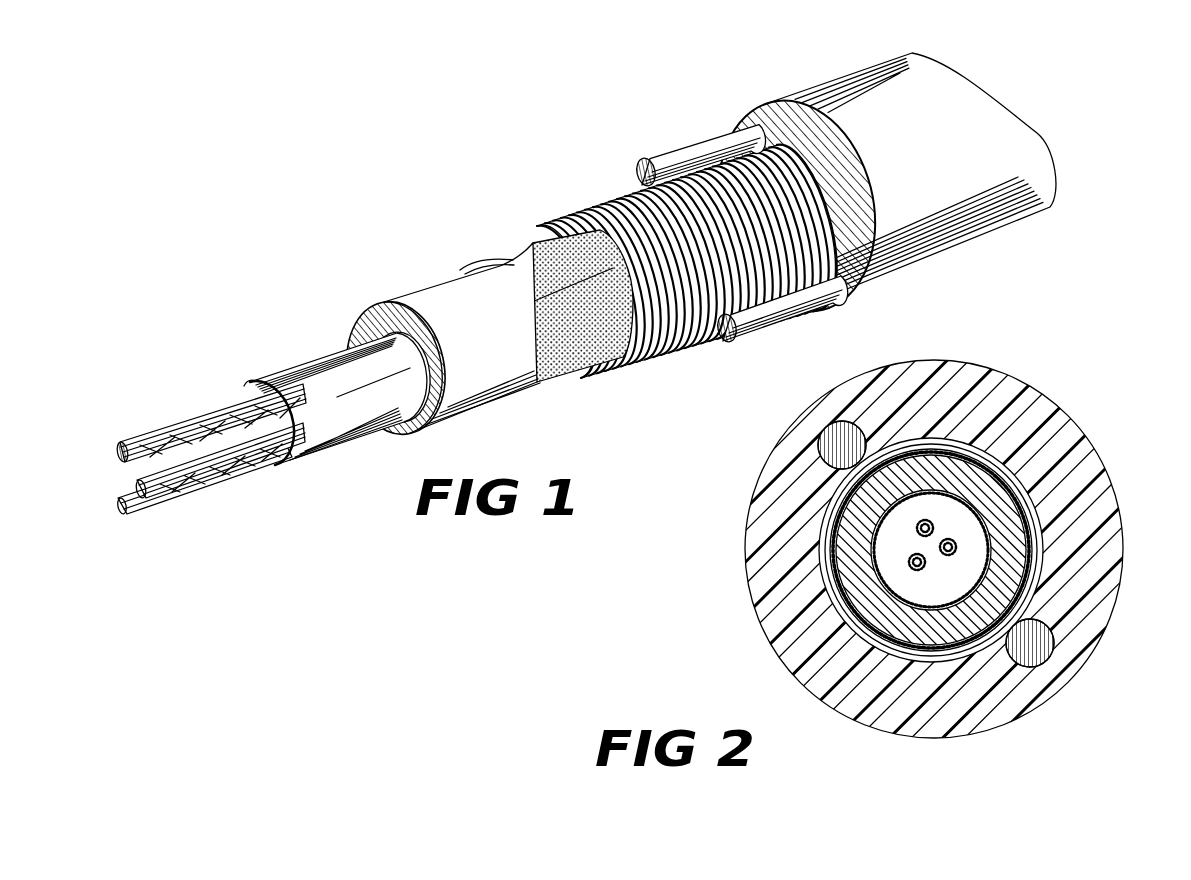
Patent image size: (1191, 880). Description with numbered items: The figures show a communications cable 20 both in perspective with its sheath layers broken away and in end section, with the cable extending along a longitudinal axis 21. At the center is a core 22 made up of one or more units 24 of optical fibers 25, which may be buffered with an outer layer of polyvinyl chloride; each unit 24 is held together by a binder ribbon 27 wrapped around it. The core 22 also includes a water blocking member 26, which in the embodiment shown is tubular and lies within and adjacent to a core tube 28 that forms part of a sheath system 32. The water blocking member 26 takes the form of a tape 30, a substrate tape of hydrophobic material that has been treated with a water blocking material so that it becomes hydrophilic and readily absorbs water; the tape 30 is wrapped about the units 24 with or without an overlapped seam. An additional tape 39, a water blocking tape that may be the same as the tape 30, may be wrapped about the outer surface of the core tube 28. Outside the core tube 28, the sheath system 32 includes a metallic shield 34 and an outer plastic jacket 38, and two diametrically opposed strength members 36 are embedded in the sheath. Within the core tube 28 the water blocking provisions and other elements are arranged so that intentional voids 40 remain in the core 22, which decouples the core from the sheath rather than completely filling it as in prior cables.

In FIG. 1, the communications cable 20 is at (585, 286).
In FIG. 2, the communications cable 20 is at (757, 540).
In FIG. 1, the longitudinal axis 21 is at (352, 393).
In FIG. 1, the core 22 is at (303, 348).
In FIG. 1, the unit 24 is at (224, 396).
In FIG. 2, the unit 24 is at (910, 564).
In FIG. 1, the optical fiber 25 is at (118, 442).
In FIG. 2, the optical fiber 25 is at (927, 520).
In FIG. 1, the water blocking member 26 is at (345, 441).
In FIG. 2, the water blocking member 26 is at (934, 603).
In FIG. 1, the binder ribbon 27 is at (213, 482).
In FIG. 1, the core tube 28 is at (463, 416).
In FIG. 2, the core tube 28 is at (1033, 499).
In FIG. 1, the tape 30 is at (275, 457).
In FIG. 1, the sheath system 32 is at (533, 213).
In FIG. 1, the metallic shield 34 is at (612, 205).
In FIG. 2, the metallic shield 34 is at (838, 487).
In FIG. 1, the strength member 36 is at (646, 160).
In FIG. 2, the strength member 36 is at (860, 441).
In FIG. 1, the outer plastic jacket 38 is at (848, 303).
In FIG. 2, the outer plastic jacket 38 is at (1105, 507).
In FIG. 1, the additional tape 39 is at (495, 262).
In FIG. 2, the additional tape 39 is at (905, 443).
In FIG. 2, the void 40 is at (907, 600).